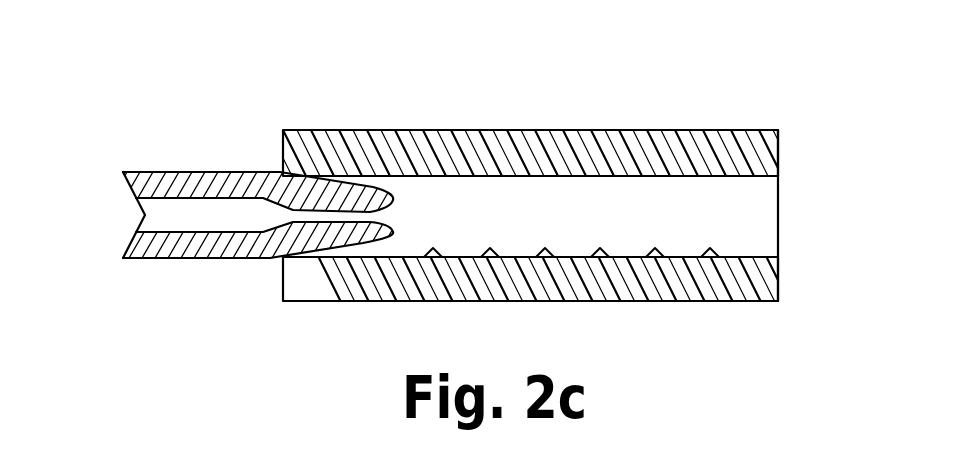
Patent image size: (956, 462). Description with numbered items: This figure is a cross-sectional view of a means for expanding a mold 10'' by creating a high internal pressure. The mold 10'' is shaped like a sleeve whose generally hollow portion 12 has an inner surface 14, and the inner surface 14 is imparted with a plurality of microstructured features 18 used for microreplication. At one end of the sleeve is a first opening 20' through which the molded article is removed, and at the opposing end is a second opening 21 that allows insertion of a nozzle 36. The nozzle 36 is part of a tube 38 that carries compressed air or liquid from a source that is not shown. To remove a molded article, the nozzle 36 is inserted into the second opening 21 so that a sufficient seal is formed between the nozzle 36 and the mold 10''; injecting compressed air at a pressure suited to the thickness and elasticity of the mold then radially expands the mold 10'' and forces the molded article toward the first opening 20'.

The mold 10'' is at (728, 53).
The hollow portion 12 is at (422, 280).
The inner surface 14 is at (755, 178).
The microstructured features 18 is at (717, 248).
The first opening 20' is at (807, 243).
The second opening 21 is at (282, 173).
The nozzle 36 is at (285, 258).
The tube 38 is at (160, 174).